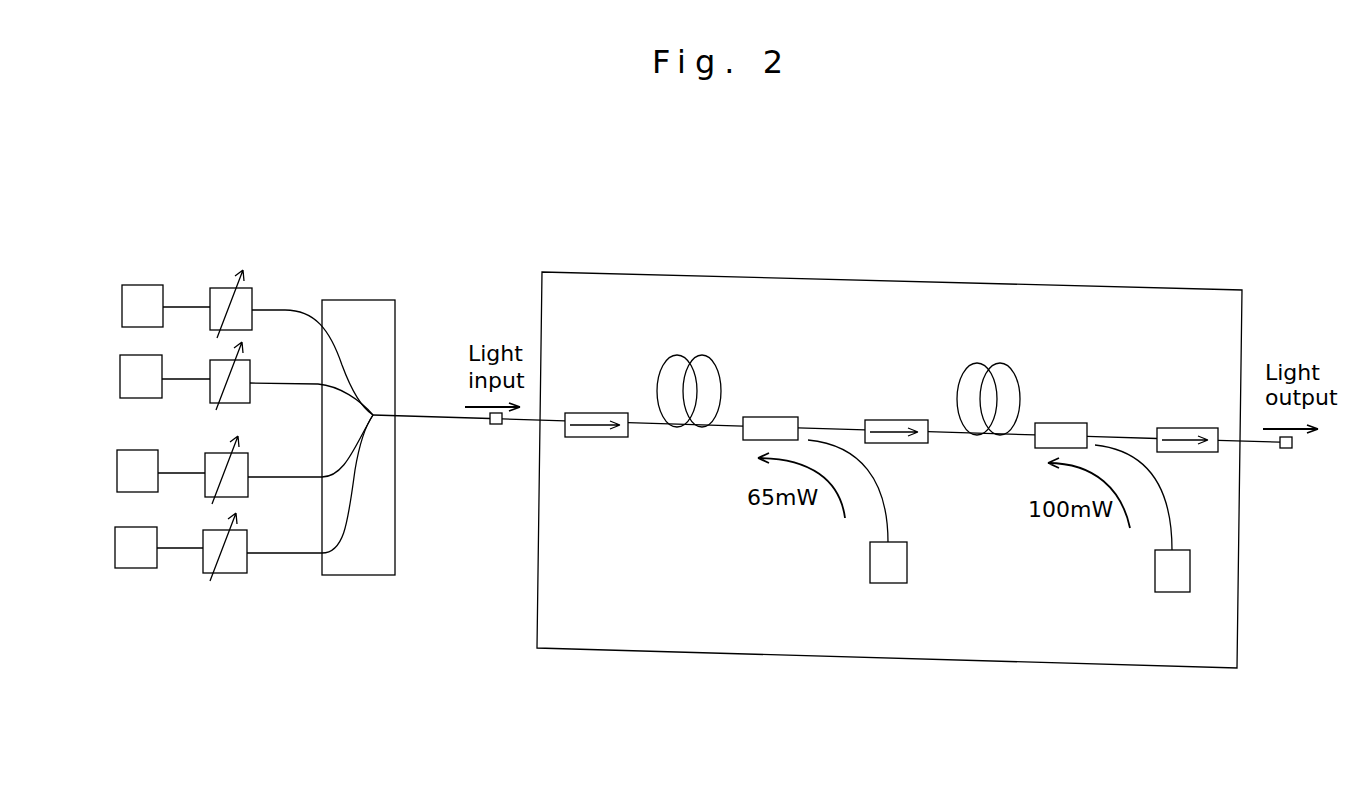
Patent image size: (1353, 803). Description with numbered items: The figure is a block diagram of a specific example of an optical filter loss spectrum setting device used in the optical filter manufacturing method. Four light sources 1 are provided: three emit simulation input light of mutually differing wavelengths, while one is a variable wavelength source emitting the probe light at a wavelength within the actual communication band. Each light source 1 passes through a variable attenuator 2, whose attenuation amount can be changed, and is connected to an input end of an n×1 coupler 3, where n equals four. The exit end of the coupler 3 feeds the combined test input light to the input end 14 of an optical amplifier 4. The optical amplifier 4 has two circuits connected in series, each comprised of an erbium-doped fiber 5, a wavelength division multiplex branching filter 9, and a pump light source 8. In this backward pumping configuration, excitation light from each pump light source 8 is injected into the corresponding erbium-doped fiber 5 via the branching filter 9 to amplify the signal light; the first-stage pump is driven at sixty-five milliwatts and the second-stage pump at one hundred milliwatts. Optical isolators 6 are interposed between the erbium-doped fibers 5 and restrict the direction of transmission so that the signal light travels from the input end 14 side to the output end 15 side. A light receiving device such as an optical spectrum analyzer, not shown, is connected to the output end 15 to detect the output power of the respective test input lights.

The light source 1 is at (137, 283).
The variable attenuator 2 is at (250, 287).
The n×1 coupler 3 is at (367, 299).
The optical amplifier 4 is at (633, 652).
The erbium-doped fiber 5 is at (680, 355).
The optical isolator 6 is at (590, 413).
The pump light source 8 is at (893, 587).
The wavelength division multiplex branching filter 9 is at (788, 417).
The input end 14 is at (495, 430).
The output end 15 is at (1287, 455).